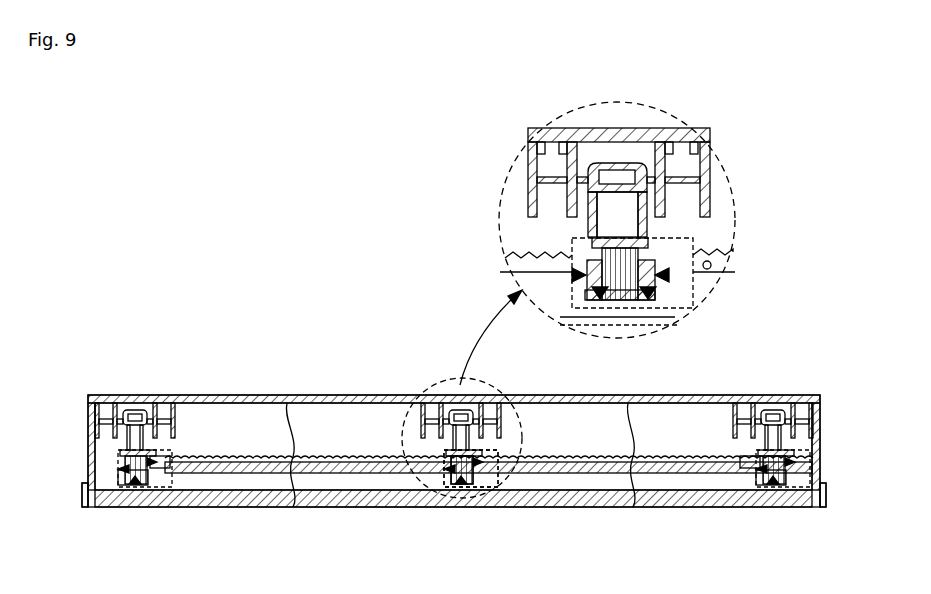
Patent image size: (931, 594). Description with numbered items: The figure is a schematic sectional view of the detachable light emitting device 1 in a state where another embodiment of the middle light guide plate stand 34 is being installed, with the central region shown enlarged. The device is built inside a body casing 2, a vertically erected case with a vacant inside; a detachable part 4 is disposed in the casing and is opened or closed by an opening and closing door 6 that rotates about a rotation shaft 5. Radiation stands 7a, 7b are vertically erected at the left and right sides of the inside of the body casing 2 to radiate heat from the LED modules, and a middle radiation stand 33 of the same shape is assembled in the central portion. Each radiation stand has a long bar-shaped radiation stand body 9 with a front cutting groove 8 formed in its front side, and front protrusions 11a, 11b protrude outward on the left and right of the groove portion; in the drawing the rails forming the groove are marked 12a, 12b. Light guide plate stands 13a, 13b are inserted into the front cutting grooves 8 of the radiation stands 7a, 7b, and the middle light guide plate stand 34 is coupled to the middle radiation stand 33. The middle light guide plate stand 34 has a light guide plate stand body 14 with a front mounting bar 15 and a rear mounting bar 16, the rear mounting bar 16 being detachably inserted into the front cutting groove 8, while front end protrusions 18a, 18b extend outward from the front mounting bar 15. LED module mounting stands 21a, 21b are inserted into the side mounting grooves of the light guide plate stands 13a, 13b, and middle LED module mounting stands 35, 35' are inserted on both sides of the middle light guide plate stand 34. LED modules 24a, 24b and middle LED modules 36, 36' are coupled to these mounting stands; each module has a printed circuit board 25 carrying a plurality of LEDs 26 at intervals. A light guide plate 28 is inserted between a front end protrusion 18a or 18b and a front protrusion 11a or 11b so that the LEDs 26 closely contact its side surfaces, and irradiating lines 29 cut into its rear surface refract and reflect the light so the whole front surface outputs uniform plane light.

The detachable light emitting device 1 is at (286, 382).
The body casing 2 is at (205, 395).
The detachable part 4 is at (448, 488).
The rotation shaft 5 is at (498, 482).
The opening and closing door 6 is at (482, 488).
The radiation stand 7a is at (135, 402).
The radiation stand 7b is at (776, 408).
The front cutting groove 8 is at (565, 218).
The radiation stand body 9 is at (623, 163).
The front protrusion 11a is at (587, 260).
The front protrusion 11b is at (668, 250).
The left profile rail 12a is at (528, 142).
The right profile rail 12b is at (710, 158).
The light guide plate stand 13a is at (122, 472).
The light guide plate stand 13b is at (822, 487).
The light guide plate stand body 14 is at (620, 305).
The front mounting bar 15 is at (652, 305).
The rear mounting bar 16 is at (575, 245).
The front end protrusion 18a is at (585, 300).
The front end protrusion 18b is at (665, 292).
The LED module mounting stand 21a is at (147, 474).
The LED module mounting stand 21b is at (756, 478).
The LED module 24a is at (160, 466).
The LED module 24b is at (750, 470).
The printed circuit board 25 is at (597, 277).
The LED 26 is at (675, 275).
The light guide plate 28 is at (378, 478).
The irradiating line 29 is at (383, 458).
The middle radiation stand 33 is at (608, 152).
The middle light guide plate stand 34 is at (572, 268).
The middle LED module mounting stand 35 is at (683, 318).
The middle LED module mounting stand 35' is at (596, 325).
The middle LED module 36 is at (705, 297).
The middle LED module 36' is at (526, 284).